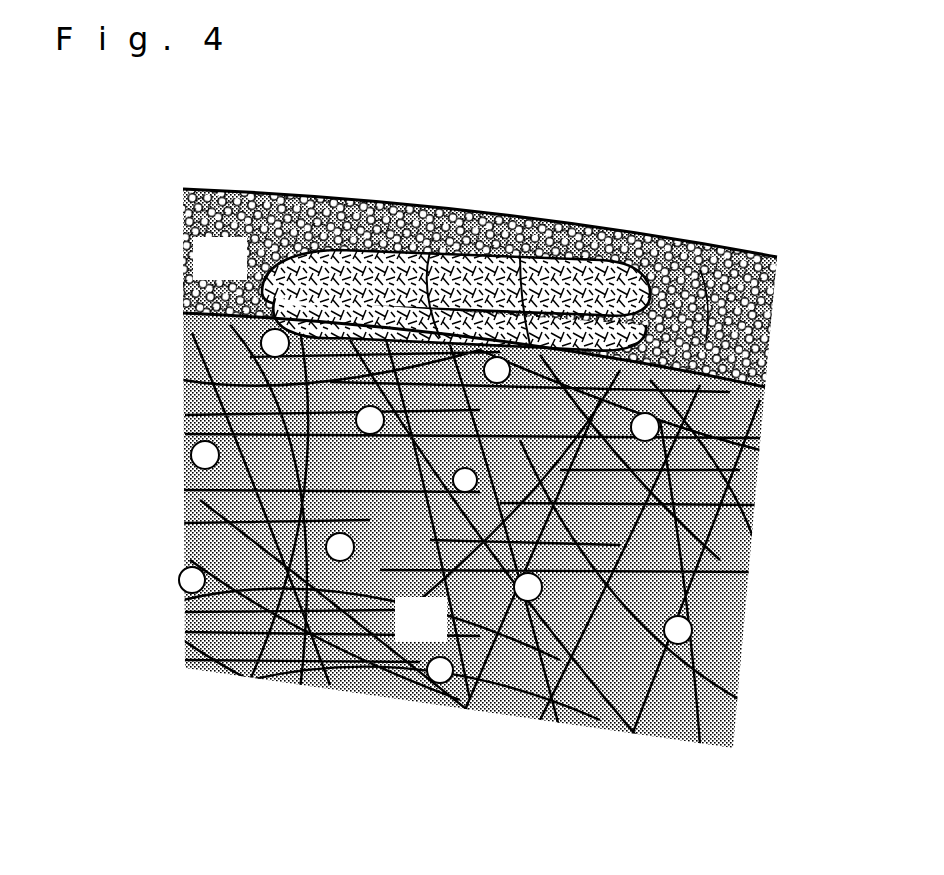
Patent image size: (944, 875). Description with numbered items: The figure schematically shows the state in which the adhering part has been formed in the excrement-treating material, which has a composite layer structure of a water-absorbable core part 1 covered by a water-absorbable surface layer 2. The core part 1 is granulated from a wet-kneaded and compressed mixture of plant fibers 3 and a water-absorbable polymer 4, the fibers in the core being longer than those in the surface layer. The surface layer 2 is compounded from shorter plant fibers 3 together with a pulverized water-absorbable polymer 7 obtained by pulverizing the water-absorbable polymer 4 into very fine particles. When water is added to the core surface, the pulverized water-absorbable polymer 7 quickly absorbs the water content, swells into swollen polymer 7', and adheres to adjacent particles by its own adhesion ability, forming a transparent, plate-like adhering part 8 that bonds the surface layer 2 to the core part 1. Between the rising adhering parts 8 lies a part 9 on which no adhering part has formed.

The core part 1 is at (463, 530).
The surface layer 2 is at (480, 233).
The plant fibers 3 is at (512, 228).
The water-absorbable polymer 4 is at (202, 455).
The pulverized water-absorbable polymer 7 is at (473, 168).
The swollen pulverized water-absorbable polymer 7' is at (474, 205).
The adhering part 8 is at (407, 207).
The part on which the adhering part has not been formed 9 is at (712, 300).